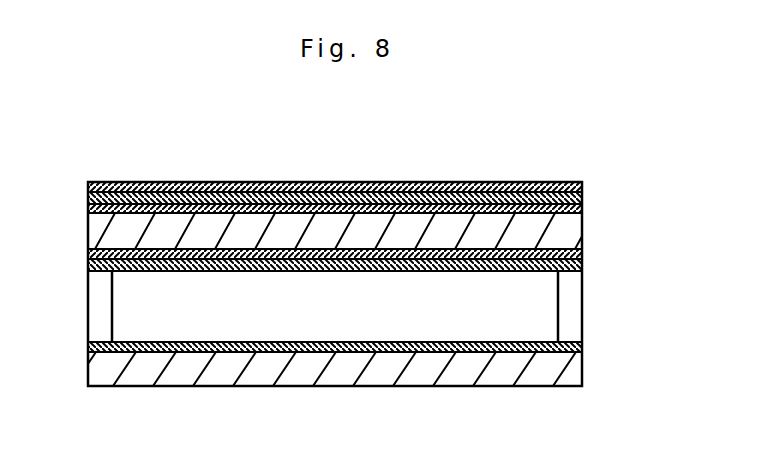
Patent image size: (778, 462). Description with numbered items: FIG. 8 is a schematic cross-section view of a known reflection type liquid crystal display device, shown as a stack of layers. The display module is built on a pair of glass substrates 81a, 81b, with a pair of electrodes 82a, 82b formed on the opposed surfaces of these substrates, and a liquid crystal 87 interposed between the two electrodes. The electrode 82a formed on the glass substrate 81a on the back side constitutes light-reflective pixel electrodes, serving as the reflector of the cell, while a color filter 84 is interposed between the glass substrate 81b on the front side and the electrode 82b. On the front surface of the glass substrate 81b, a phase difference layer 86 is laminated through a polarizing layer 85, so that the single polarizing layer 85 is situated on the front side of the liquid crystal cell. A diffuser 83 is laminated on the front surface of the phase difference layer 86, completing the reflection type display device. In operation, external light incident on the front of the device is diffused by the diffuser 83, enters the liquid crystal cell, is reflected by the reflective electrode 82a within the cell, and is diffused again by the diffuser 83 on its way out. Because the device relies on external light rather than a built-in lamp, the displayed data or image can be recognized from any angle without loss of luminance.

The diffuser 83 is at (258, 183).
The phase difference layer 86 is at (313, 197).
The polarizing layer 85 is at (383, 207).
The glass substrate 81b is at (455, 220).
The color filter 84 is at (222, 252).
The electrode 82b is at (346, 263).
The liquid crystal 87 is at (543, 303).
The electrode 82a is at (410, 351).
The glass substrate 81a is at (502, 372).